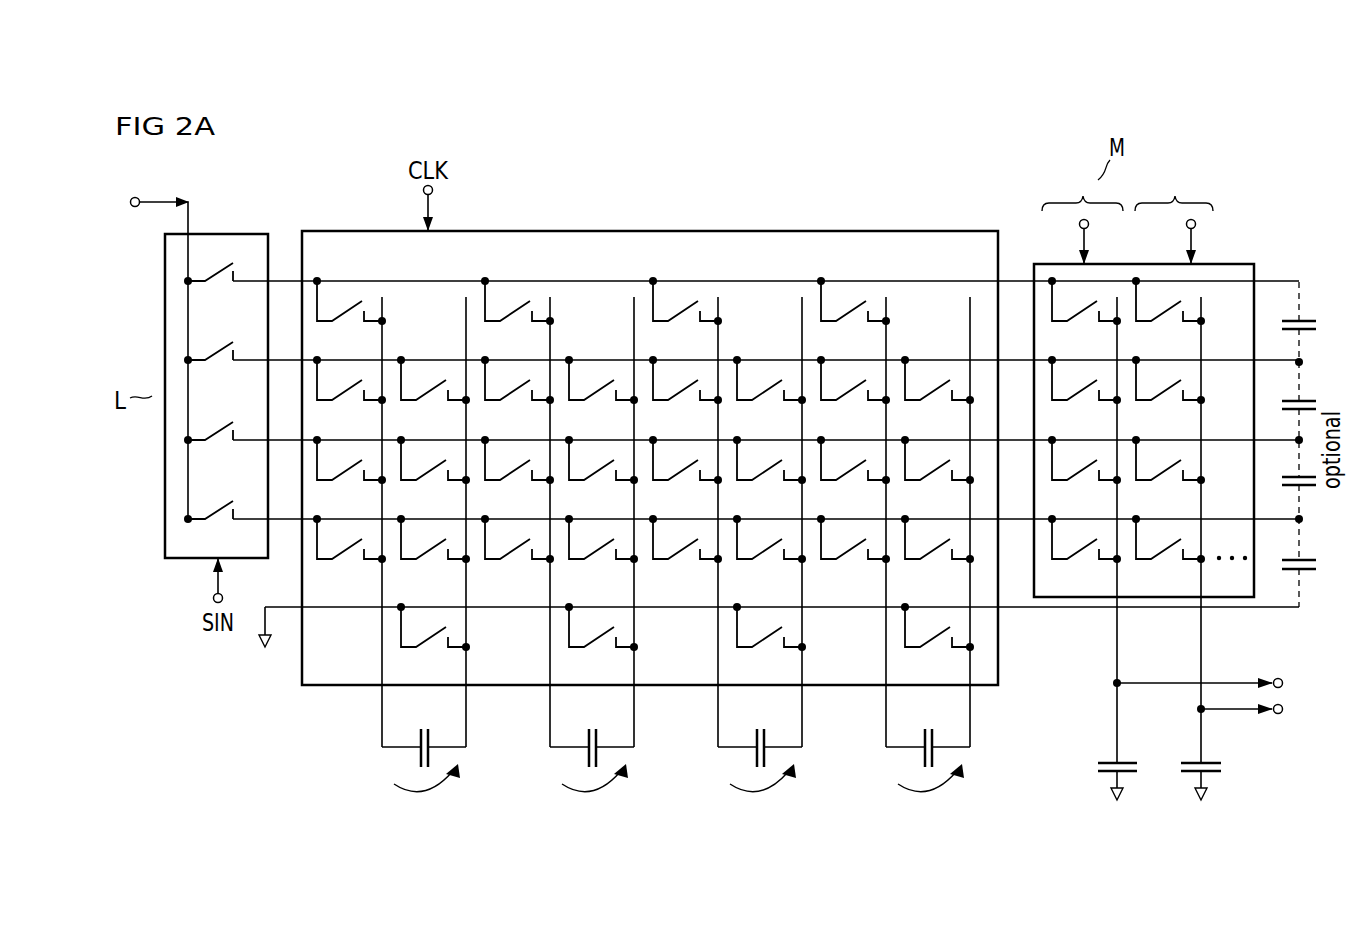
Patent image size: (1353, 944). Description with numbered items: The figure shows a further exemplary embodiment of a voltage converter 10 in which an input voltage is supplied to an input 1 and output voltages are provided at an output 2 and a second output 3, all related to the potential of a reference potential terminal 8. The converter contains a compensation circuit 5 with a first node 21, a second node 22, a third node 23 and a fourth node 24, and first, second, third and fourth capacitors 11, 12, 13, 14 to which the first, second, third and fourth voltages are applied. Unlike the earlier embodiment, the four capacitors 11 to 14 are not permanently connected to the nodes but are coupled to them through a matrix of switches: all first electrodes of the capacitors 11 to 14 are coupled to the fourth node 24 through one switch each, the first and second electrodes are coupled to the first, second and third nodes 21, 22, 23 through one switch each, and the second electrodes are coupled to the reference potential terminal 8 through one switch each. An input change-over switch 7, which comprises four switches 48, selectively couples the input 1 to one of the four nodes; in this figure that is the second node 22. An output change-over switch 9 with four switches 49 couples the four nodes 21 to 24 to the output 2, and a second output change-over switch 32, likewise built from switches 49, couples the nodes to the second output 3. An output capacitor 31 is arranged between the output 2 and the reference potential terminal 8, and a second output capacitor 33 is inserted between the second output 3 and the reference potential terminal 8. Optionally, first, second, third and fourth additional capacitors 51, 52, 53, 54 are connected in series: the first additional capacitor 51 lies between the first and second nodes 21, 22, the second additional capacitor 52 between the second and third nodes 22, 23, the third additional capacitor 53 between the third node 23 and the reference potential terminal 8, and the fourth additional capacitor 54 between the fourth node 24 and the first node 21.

The input 1 is at (135, 208).
The output 2 is at (1278, 676).
The second output 3 is at (1278, 716).
The compensation circuit 5 is at (625, 230).
The input change-over switch 7 is at (230, 232).
The reference potential terminal 8 is at (265, 650).
The output change-over switch 9 is at (1073, 216).
The voltage converter 10 is at (1230, 168).
The first capacitor 11 is at (586, 758).
The second capacitor 12 is at (754, 758).
The third capacitor 13 is at (922, 758).
The fourth capacitor 14 is at (418, 758).
The first node 21 is at (488, 359).
The second node 22 is at (572, 439).
The third node 23 is at (740, 518).
The fourth node 24 is at (320, 278).
The output capacitor 31 is at (1106, 775).
The second output change-over switch 32 is at (1199, 216).
The second output capacitor 33 is at (1189, 775).
The switch 48 is at (222, 348).
The switch 49 is at (1085, 316).
The first additional capacitor 51 is at (1306, 398).
The second additional capacitor 52 is at (1306, 475).
The third additional capacitor 53 is at (1306, 558).
The fourth additional capacitor 54 is at (1306, 318).